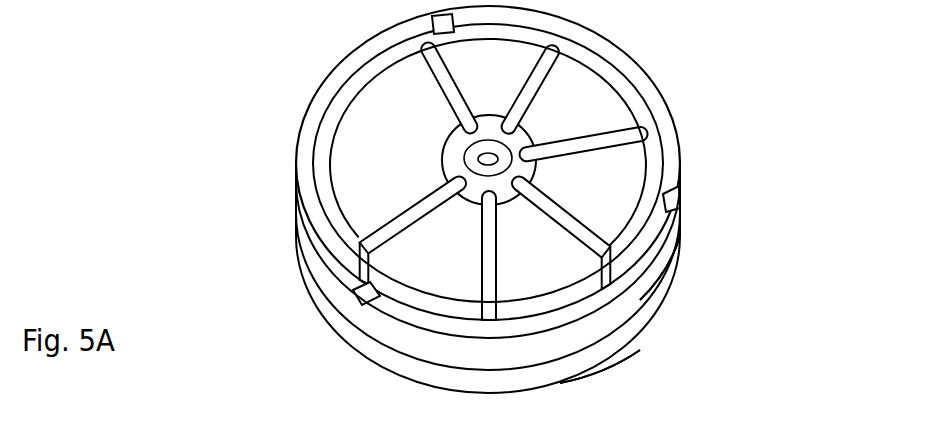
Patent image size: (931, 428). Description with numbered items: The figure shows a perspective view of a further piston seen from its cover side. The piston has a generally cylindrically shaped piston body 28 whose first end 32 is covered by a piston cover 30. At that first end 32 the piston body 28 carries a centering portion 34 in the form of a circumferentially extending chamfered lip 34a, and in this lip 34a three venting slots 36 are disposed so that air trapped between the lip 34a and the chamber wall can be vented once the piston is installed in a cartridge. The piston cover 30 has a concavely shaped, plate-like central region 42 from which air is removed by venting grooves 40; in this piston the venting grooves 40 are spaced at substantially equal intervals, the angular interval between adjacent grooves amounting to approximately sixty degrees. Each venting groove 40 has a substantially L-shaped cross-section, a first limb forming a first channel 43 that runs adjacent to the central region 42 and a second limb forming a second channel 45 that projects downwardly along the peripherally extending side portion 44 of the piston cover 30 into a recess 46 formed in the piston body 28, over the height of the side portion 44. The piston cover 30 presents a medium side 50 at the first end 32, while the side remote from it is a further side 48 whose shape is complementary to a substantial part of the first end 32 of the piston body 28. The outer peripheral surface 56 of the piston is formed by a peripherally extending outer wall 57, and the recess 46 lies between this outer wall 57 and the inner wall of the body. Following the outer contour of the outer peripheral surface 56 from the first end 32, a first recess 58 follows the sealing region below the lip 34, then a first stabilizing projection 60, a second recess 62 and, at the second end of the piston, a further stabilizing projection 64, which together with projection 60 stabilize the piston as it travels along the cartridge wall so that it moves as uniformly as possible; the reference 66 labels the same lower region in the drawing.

The piston body 28 is at (672, 277).
The piston cover 30 is at (598, 100).
The first end 32 is at (663, 225).
The centering portion 34 is at (663, 225).
The chamfered lip 34a is at (318, 107).
The venting slots 36 is at (440, 12).
The venting grooves 40 is at (497, 160).
The concavely shaped central region 42 is at (512, 183).
The first channel 43 is at (548, 55).
The peripherally extending side portion 44 is at (645, 300).
The second channel 45 is at (548, 152).
The recess 46 is at (568, 293).
The further side 48 is at (816, 421).
The medium side 50 is at (393, 75).
The outer peripheral surface 56 is at (670, 235).
The outer wall 57 is at (408, 329).
The first recess 58 is at (335, 280).
The first stabilizing projection 60 is at (345, 296).
The second recess 62 is at (372, 338).
The further stabilizing projection 64 is at (612, 333).
The flange 66 is at (612, 333).